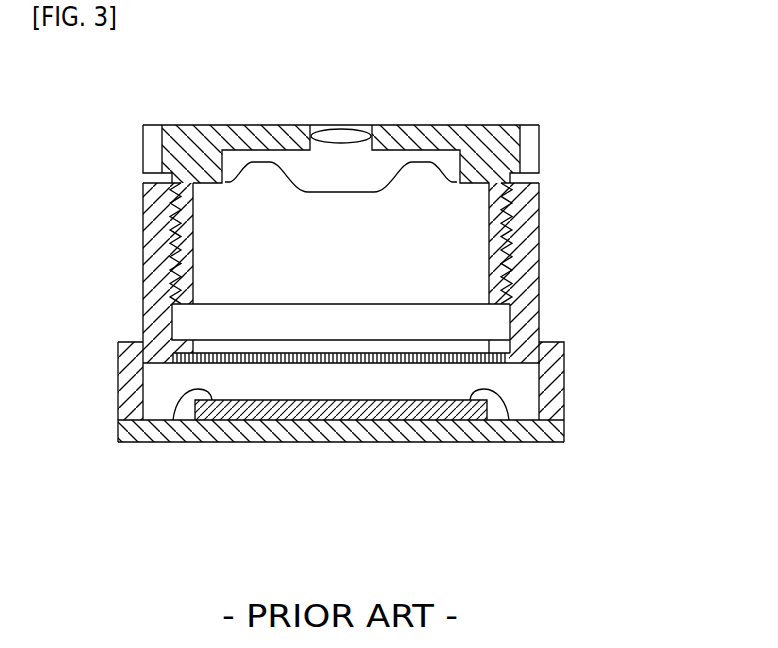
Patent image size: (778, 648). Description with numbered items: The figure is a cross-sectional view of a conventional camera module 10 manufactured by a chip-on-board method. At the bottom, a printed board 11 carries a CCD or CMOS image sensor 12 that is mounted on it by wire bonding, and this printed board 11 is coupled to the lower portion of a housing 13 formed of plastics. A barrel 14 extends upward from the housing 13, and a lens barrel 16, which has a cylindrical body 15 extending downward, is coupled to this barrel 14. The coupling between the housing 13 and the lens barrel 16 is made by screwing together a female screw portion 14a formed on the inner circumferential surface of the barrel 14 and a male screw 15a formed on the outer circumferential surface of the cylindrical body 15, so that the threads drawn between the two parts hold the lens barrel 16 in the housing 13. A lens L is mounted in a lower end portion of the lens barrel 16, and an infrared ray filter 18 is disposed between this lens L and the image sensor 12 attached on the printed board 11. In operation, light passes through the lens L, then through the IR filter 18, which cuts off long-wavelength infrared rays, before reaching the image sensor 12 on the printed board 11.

The camera module 10 is at (610, 130).
The printed board 11 is at (287, 441).
The image sensor 12 is at (355, 420).
The housing 13 is at (560, 367).
The barrel 14 is at (148, 264).
The female screw portion 14a is at (170, 303).
The cylindrical body 15 is at (173, 222).
The male screw 15a is at (508, 242).
The lens barrel 16 is at (503, 132).
The infrared ray filter 18 is at (468, 353).
The lens L is at (338, 137).